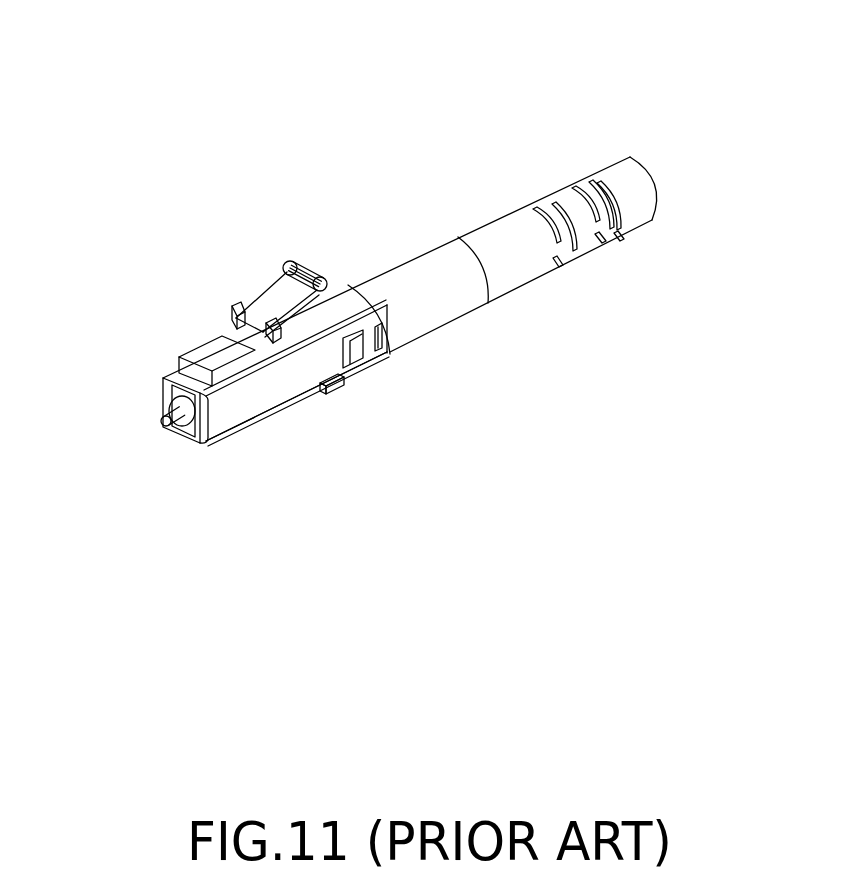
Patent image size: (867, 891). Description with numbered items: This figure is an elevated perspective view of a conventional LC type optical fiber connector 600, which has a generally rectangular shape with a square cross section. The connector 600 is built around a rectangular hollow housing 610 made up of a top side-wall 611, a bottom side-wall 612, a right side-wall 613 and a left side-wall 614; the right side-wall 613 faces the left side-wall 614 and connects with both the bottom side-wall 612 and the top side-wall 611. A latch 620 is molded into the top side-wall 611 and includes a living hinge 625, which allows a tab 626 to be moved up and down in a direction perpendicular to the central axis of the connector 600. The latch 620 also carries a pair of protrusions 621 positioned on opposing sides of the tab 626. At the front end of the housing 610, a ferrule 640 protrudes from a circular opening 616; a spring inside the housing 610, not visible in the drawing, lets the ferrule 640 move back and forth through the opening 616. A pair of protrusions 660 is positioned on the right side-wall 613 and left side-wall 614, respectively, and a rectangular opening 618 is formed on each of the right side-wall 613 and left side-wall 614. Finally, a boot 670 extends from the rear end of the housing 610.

The LC type optical fiber connector 600 is at (292, 115).
The housing 610 is at (315, 425).
The top side-wall 611 is at (351, 303).
The bottom side-wall 612 is at (193, 443).
The right side-wall 613 is at (258, 407).
The left side-wall 614 is at (162, 391).
The circular opening 616 is at (188, 428).
The rectangular opening 618 is at (350, 350).
The latch 620 is at (313, 246).
The protrusions 621 is at (235, 305).
The living hinge 625 is at (189, 374).
The tab 626 is at (282, 295).
The ferrule 640 is at (166, 421).
The protrusions 660 is at (337, 390).
The boot 670 is at (527, 267).